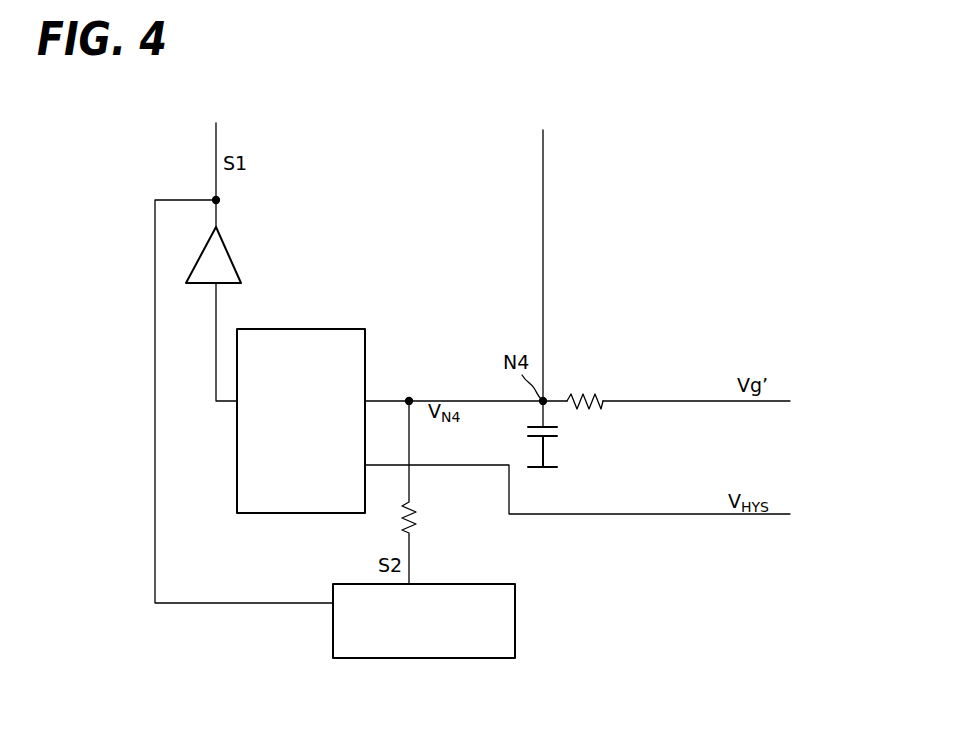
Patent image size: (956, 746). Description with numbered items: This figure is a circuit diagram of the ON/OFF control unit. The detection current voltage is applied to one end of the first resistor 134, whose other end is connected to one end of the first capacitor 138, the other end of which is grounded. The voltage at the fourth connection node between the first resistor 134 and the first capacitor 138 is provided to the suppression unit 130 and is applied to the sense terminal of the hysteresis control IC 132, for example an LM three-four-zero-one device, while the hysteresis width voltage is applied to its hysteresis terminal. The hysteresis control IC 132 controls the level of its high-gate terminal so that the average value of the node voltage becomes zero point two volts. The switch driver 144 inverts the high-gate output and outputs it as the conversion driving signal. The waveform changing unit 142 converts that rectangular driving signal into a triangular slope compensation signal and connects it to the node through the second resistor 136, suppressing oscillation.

The suppression unit 130 is at (536, 265).
The hysteresis control IC 132 is at (276, 515).
The first resistor 134 is at (589, 392).
The second resistor 136 is at (418, 522).
The first capacitor 138 is at (560, 431).
The waveform changing unit 142 is at (478, 660).
The switch driver 144 is at (233, 251).